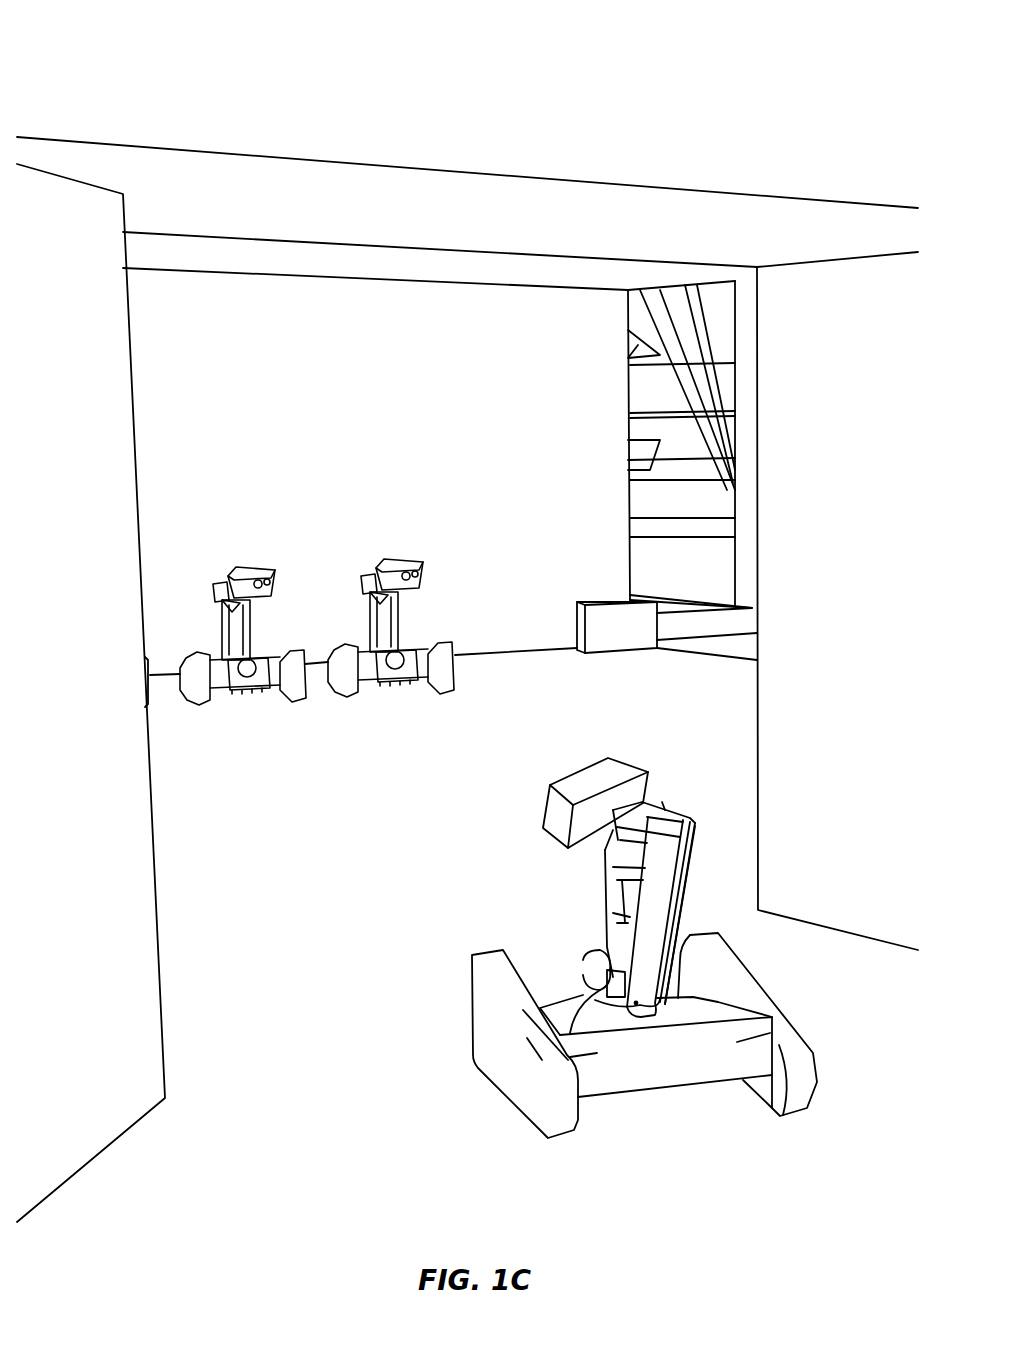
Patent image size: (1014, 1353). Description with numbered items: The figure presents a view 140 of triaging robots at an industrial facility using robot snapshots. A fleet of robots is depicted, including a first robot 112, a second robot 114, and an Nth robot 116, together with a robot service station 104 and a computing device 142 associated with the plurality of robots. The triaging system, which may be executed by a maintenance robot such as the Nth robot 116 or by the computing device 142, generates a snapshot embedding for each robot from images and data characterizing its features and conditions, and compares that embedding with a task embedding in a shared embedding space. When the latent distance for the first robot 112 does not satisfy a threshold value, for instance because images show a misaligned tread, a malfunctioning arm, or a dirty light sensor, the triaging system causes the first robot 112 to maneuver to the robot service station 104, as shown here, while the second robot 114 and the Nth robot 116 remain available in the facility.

The view 140 is at (169, 91).
The robot service station 104 is at (326, 859).
The computing device 142 is at (577, 602).
The second robot 114 is at (307, 688).
The Nth robot 116 is at (455, 672).
The first robot 112 is at (580, 1127).